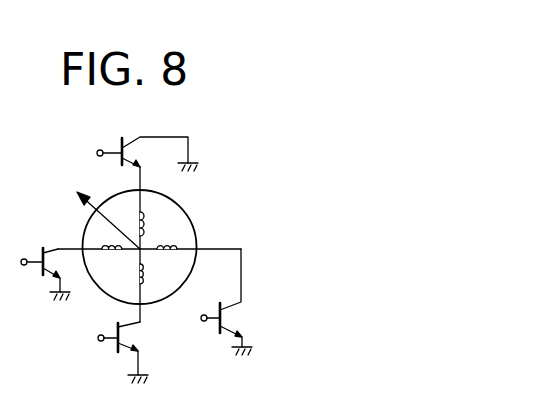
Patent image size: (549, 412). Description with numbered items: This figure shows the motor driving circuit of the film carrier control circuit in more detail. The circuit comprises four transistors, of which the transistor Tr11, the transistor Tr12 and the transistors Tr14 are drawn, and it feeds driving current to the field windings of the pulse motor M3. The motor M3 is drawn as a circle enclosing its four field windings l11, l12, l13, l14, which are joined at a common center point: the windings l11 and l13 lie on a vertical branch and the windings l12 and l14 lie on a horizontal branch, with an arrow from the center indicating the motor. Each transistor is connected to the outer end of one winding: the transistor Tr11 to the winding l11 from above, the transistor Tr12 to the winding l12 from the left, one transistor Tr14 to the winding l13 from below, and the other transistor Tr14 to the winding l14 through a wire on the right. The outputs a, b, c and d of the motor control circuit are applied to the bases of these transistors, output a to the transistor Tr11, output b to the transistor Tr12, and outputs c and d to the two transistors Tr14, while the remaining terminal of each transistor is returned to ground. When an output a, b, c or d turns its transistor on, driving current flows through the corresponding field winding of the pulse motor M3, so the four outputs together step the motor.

The pulse motor M3 is at (168, 204).
The field winding l11 is at (127, 219).
The field winding l12 is at (111, 264).
The field winding l13 is at (161, 271).
The field winding l14 is at (170, 234).
The transistor Tr11 is at (150, 139).
The transistor Tr12 is at (48, 259).
The transistor Tr14 is at (197, 316).
The output of the motor control circuit a is at (92, 153).
The output of the motor control circuit b is at (16, 262).
The output of the motor control circuit c is at (92, 338).
The output of the motor control circuit d is at (196, 318).